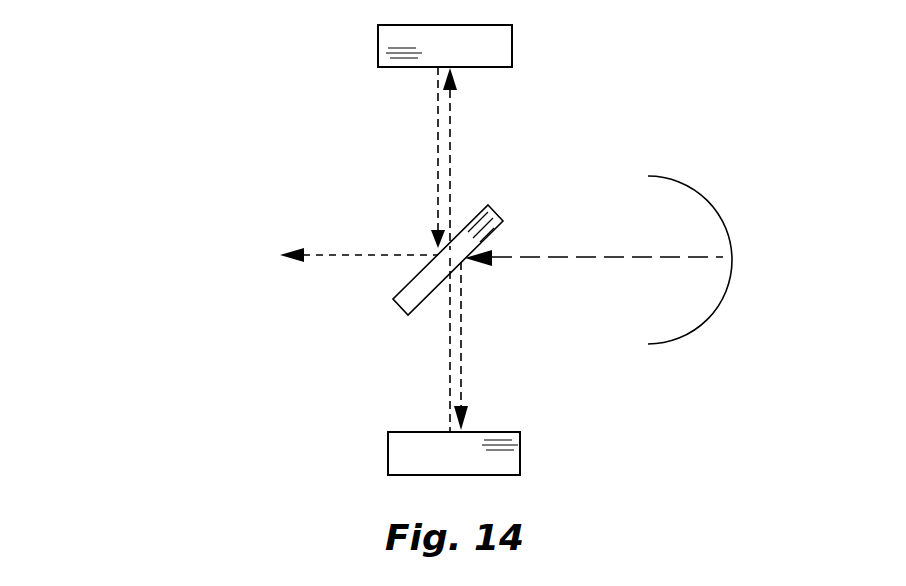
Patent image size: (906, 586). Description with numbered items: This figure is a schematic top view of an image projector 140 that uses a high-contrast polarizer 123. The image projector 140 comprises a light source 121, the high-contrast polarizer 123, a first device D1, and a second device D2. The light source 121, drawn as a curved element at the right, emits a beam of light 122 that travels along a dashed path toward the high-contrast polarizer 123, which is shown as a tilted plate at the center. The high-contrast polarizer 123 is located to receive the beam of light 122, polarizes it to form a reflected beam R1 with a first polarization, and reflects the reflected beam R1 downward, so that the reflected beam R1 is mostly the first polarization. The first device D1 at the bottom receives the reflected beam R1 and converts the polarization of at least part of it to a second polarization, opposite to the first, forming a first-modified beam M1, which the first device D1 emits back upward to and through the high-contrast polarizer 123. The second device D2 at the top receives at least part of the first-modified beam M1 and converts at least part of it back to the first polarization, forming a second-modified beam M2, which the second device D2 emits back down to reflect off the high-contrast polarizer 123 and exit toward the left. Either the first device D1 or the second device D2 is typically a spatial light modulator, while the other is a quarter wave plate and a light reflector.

The image projector 140 is at (138, 62).
The light source 121 is at (732, 240).
The beam of light 122 is at (578, 260).
The high-contrast polarizer 123 is at (398, 300).
The first device D1 is at (454, 453).
The second device D2 is at (445, 46).
The first-modified beam M1 is at (448, 340).
The second-modified beam M2 is at (435, 114).
The reflected beam R1 is at (465, 353).